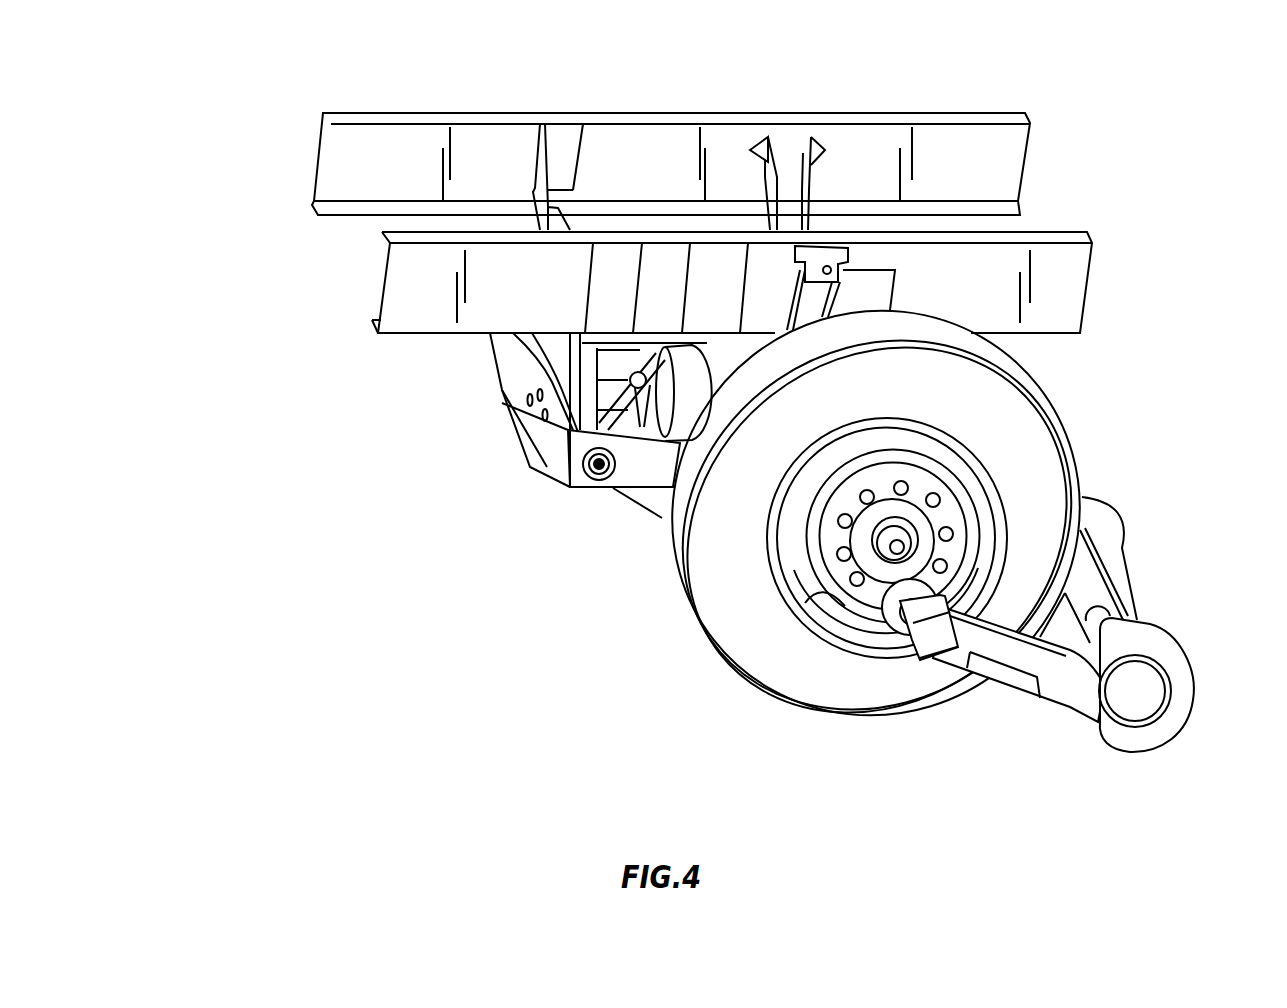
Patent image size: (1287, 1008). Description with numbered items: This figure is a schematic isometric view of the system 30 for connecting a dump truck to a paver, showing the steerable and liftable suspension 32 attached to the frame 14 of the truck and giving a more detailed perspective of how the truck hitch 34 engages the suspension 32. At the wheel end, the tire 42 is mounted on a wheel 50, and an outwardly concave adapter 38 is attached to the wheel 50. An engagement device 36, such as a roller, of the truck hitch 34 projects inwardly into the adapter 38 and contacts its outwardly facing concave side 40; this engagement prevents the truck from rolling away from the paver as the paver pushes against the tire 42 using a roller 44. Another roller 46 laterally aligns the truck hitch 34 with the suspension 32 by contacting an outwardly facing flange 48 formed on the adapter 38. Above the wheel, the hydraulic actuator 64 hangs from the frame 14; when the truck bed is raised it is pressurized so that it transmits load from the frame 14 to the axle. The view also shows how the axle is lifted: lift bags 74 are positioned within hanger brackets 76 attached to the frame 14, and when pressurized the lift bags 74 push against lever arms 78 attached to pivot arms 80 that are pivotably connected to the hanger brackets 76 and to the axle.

The system 30 is at (231, 128).
The frame 14 is at (1057, 231).
The hydraulic actuator 64 is at (843, 297).
The tire 42 is at (1027, 370).
The roller 46 is at (1012, 633).
The roller 44 is at (1107, 585).
The truck hitch 34 is at (1140, 600).
The hanger brackets 76 is at (580, 385).
The lever arms 78 is at (575, 410).
The suspension 32 is at (603, 508).
The pivot arms 80 is at (650, 440).
The lift bags 74 is at (668, 427).
The wheel 50 is at (780, 545).
The concave side 40 is at (812, 600).
The flange 48 is at (827, 636).
The engagement device 36 is at (853, 634).
The adapter 38 is at (892, 660).